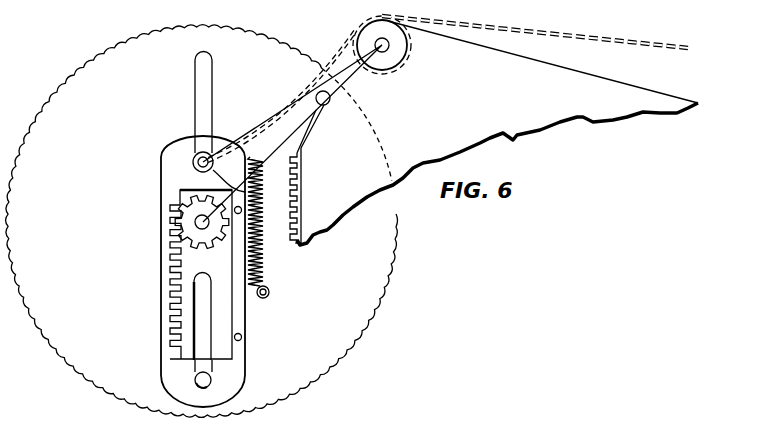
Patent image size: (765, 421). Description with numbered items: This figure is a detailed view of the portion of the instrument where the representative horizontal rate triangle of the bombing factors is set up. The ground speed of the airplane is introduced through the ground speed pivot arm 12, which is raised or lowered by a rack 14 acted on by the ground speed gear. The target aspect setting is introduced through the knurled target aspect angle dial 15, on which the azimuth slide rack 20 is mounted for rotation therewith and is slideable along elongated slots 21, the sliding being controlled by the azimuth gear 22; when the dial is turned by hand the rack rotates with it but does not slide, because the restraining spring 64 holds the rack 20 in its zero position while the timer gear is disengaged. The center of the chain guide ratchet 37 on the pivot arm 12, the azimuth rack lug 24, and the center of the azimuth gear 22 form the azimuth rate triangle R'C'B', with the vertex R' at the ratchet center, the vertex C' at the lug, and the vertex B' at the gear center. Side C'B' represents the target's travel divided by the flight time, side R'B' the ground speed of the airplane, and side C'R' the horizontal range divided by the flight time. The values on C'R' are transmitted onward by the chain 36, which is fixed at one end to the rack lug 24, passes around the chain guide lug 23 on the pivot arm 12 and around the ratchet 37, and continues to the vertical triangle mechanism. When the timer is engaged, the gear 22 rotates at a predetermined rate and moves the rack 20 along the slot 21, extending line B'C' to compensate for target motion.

The ground speed pivot arm 12 is at (554, 113).
The rack 14 is at (302, 181).
The target aspect angle dial 15 is at (344, 330).
The azimuth slide rack 20 is at (168, 163).
The elongated slots 21 is at (197, 93).
The azimuth gear 22 is at (178, 198).
The chain guide lug 23 is at (330, 105).
The azimuth rack lug 24 is at (196, 156).
The chain 36 is at (601, 43).
The chain guide ratchet 37 is at (389, 76).
The spring 64 is at (268, 262).
The rate triangle vertex B' is at (170, 222).
The rate triangle vertex C' is at (290, 133).
The rate triangle vertex R' is at (527, 61).